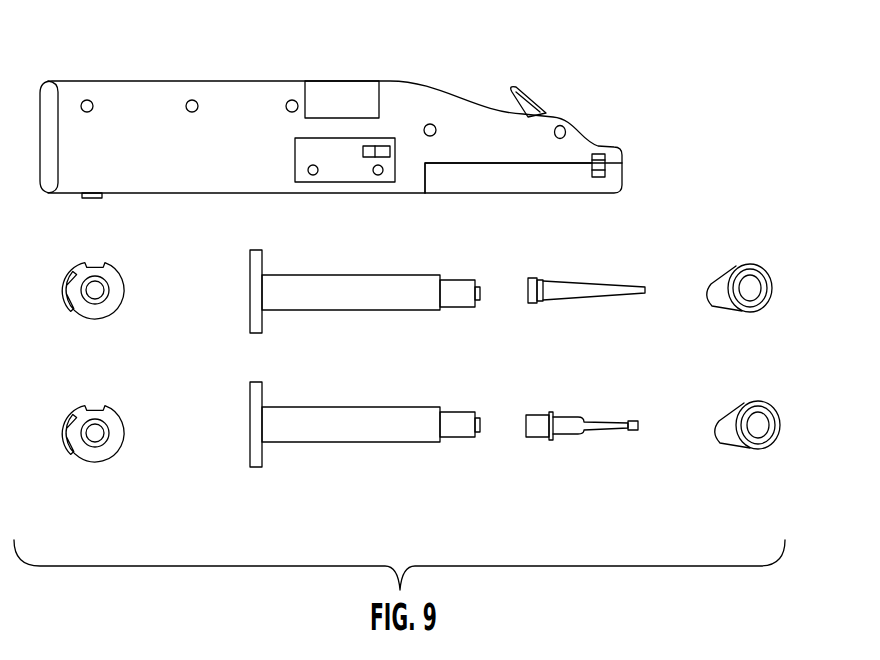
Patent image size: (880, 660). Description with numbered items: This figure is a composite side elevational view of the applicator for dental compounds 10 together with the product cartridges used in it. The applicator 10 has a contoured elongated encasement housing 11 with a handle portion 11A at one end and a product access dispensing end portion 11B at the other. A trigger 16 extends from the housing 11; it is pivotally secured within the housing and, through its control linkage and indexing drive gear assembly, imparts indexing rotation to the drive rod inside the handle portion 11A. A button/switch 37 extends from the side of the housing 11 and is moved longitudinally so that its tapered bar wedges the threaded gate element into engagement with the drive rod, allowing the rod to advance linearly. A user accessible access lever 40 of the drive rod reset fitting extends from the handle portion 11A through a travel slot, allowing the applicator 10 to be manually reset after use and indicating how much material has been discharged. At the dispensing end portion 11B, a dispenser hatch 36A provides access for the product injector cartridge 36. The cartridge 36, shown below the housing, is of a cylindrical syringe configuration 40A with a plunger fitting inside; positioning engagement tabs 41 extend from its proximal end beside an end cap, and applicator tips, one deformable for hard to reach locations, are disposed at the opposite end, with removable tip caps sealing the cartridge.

The applicator for dental compounds 10 is at (371, 132).
The encasement housing 11 is at (287, 80).
The handle portion 11A is at (115, 80).
The product access dispensing end portion 11B is at (598, 138).
The trigger 16 is at (530, 98).
The product injector cartridge 36 is at (298, 440).
The dispenser hatch 36A is at (568, 182).
The button/switch 37 is at (378, 175).
The access lever 40 is at (90, 200).
The cylindrical syringe configuration 40A is at (428, 432).
The positioning engagement tabs 41 is at (248, 460).